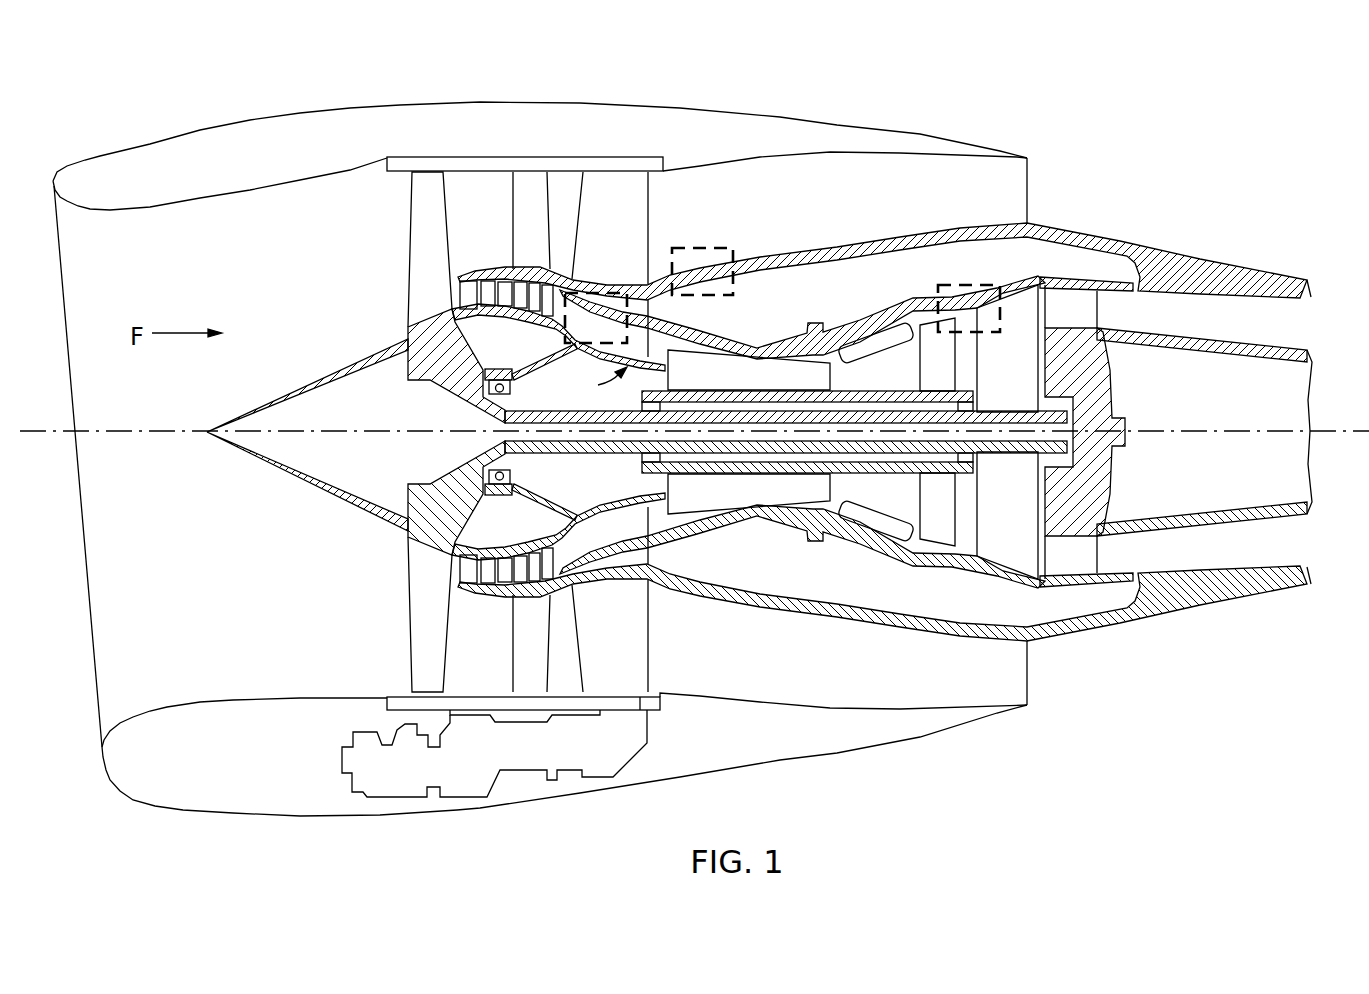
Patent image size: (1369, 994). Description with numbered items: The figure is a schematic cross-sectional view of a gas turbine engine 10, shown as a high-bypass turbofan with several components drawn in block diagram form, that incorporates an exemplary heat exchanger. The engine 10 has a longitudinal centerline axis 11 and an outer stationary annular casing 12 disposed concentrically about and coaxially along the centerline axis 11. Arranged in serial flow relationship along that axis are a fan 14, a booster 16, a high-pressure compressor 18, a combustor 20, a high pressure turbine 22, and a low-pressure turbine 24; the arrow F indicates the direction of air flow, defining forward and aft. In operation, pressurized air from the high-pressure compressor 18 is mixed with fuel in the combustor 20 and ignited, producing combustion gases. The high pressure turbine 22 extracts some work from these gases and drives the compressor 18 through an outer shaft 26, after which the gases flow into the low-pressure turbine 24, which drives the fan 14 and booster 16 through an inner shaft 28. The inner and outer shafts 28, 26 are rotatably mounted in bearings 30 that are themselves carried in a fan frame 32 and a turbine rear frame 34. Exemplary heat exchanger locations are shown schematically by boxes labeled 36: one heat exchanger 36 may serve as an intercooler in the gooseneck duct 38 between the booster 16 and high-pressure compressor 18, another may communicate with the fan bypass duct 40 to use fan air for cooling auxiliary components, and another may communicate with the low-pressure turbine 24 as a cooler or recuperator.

The gas turbine engine 10 is at (882, 113).
The longitudinal centerline axis 11 is at (170, 430).
The outer stationary annular casing 12 is at (758, 347).
The fan 14 is at (420, 264).
The booster 16 is at (488, 293).
The high-pressure compressor 18 is at (709, 386).
The combustor 20 is at (875, 350).
The high pressure turbine 22 is at (951, 516).
The low-pressure turbine 24 is at (1024, 388).
The outer shaft 26 is at (903, 392).
The inner shaft 28 is at (600, 450).
The bearings 30 is at (512, 387).
The fan frame 32 is at (645, 303).
The turbine rear frame 34 is at (1103, 388).
The heat exchanger 36 is at (712, 246).
The gooseneck duct 38 is at (597, 384).
The fan bypass duct 40 is at (866, 211).